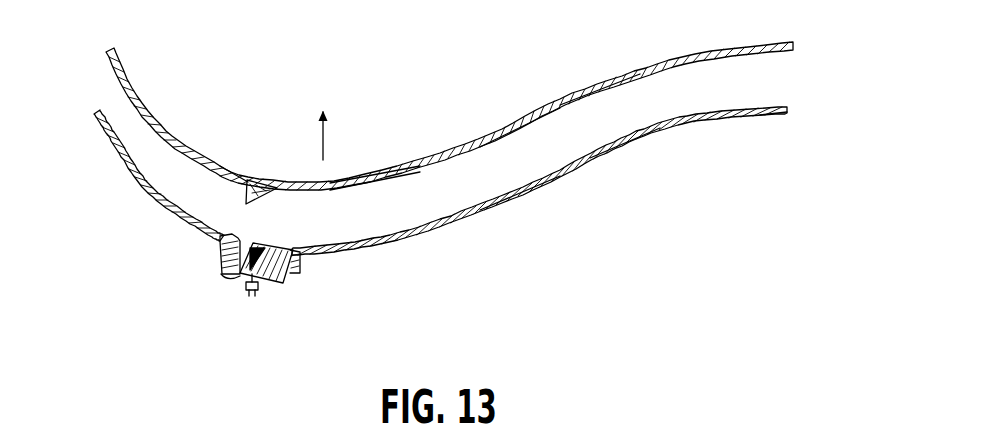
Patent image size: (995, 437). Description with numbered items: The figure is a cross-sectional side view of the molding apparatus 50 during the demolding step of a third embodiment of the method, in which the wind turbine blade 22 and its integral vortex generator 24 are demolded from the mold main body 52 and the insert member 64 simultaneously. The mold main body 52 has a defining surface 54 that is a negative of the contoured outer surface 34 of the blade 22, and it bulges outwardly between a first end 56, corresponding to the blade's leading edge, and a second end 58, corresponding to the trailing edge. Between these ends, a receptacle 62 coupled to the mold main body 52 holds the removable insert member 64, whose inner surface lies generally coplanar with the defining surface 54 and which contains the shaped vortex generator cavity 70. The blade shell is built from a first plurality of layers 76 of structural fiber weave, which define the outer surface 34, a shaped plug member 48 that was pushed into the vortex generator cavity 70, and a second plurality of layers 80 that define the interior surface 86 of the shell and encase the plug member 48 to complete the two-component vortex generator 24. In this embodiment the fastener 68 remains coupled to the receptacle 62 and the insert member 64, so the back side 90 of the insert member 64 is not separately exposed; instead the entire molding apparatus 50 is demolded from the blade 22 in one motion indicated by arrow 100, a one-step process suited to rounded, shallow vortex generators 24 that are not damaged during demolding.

The wind turbine blade 22 is at (493, 136).
The integral vortex generator 24 is at (243, 203).
The contoured outer surface 34 is at (507, 144).
The shaped plug member 48 is at (256, 182).
The molding apparatus 50 is at (448, 180).
The mold main body 52 is at (608, 153).
The defining surface 54 is at (514, 186).
The first end 56 is at (99, 112).
The second end 58 is at (795, 112).
The receptacle 62 is at (279, 278).
The removable insert member 64 is at (280, 268).
The fastener 68 is at (253, 297).
The vortex generator cavity 70 is at (219, 249).
The first plurality of layers 76 is at (397, 181).
The second plurality of layers 80 is at (367, 178).
The interior surface 86 is at (577, 97).
The back side 90 is at (236, 278).
The arrow 100 is at (324, 140).